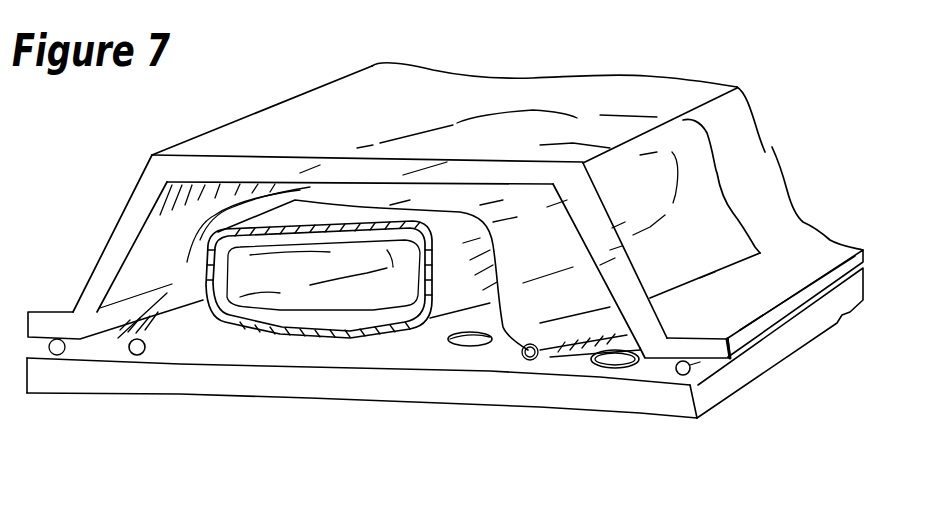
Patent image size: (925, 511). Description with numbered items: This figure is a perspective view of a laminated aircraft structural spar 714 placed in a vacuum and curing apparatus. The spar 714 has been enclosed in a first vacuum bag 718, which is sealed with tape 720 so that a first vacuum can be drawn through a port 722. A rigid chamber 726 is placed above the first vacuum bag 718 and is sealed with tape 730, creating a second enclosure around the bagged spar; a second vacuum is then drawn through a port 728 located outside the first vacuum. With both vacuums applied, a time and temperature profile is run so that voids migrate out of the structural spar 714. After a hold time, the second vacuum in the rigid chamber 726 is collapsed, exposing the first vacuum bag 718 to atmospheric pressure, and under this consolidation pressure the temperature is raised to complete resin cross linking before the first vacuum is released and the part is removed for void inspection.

The aircraft structural spar 714 is at (390, 335).
The first vacuum bag 718 is at (730, 212).
The tape 720 is at (133, 353).
The port 722 is at (467, 348).
The rigid chamber 726 is at (753, 119).
The port 728 is at (612, 368).
The tape 730 is at (680, 375).